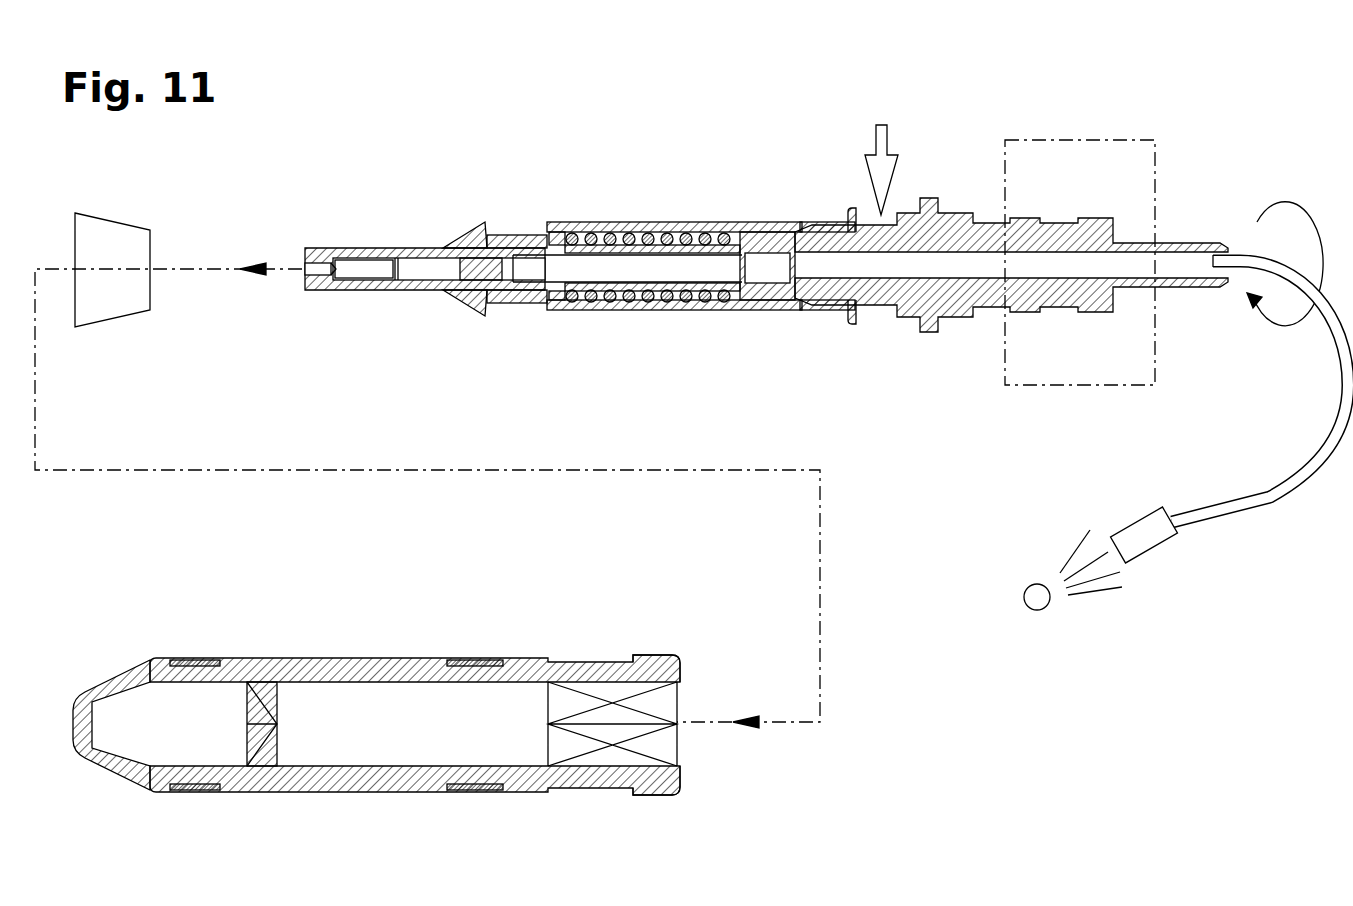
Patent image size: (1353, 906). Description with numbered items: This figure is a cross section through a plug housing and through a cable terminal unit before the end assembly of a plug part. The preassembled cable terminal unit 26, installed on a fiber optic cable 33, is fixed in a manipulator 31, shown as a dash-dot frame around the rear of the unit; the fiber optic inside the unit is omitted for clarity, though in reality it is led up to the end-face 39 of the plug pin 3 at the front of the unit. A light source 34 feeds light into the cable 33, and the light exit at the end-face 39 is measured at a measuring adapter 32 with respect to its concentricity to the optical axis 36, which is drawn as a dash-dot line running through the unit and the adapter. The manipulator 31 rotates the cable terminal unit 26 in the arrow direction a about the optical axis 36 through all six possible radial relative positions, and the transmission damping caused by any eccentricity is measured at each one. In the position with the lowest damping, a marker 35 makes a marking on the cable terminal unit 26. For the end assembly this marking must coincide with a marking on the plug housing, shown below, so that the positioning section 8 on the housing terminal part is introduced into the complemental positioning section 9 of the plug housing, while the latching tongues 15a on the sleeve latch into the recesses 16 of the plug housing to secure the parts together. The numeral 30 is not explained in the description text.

The plug pin 3 is at (395, 293).
The positioning section 8 is at (883, 318).
The complemental positioning section 9 is at (668, 742).
The latching tongues 15a is at (820, 318).
The recesses 16 is at (629, 656).
The cable terminal unit 26 is at (657, 359).
The magazine 30 is at (678, 678).
The manipulator 31 is at (1083, 390).
The measuring adapter 32 is at (110, 235).
The fiber optic cable 33 is at (1306, 462).
The light source 34 is at (1024, 590).
The marker 35 is at (878, 176).
The optical axis 36 is at (188, 266).
The end-face 39 is at (301, 284).
The arrow direction a is at (1302, 221).